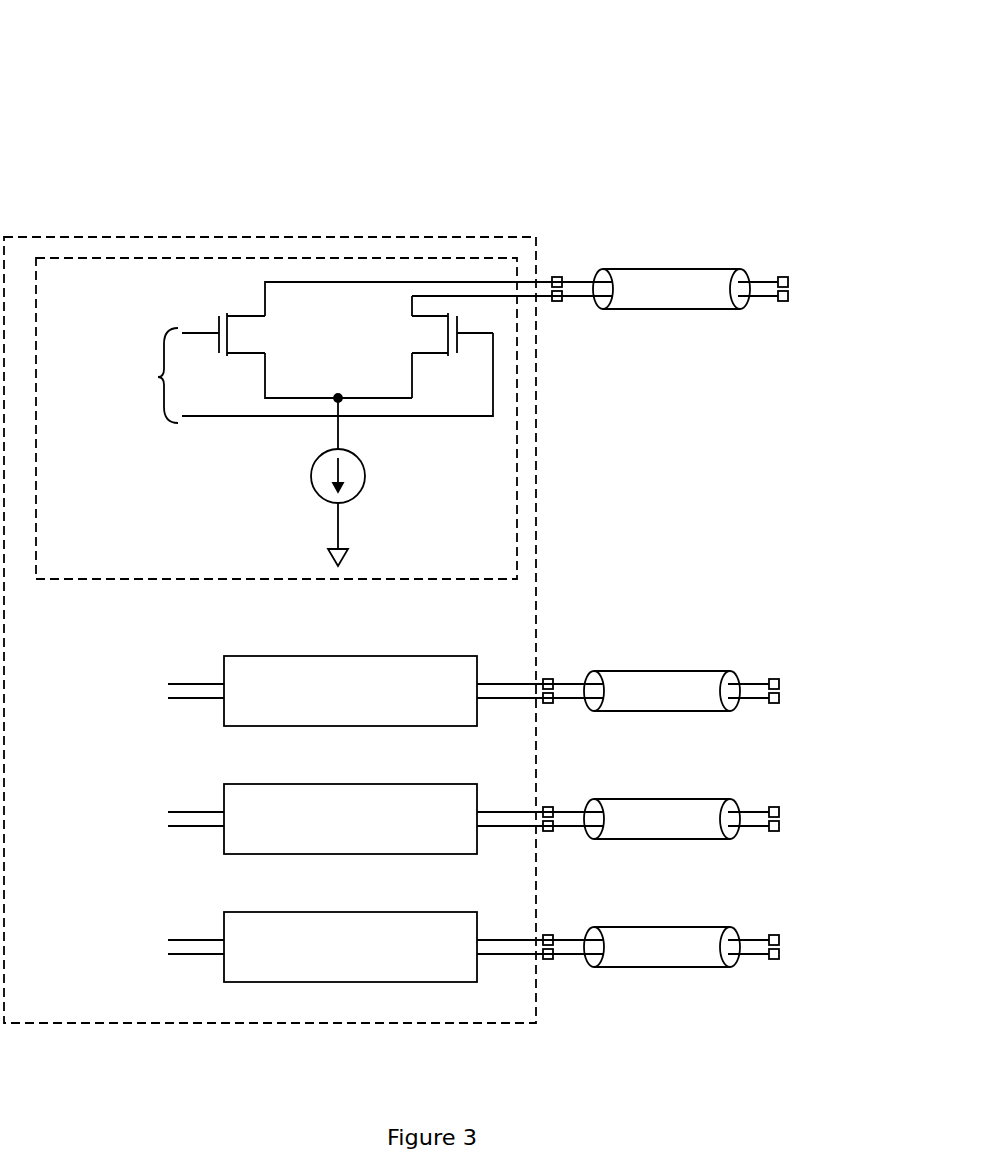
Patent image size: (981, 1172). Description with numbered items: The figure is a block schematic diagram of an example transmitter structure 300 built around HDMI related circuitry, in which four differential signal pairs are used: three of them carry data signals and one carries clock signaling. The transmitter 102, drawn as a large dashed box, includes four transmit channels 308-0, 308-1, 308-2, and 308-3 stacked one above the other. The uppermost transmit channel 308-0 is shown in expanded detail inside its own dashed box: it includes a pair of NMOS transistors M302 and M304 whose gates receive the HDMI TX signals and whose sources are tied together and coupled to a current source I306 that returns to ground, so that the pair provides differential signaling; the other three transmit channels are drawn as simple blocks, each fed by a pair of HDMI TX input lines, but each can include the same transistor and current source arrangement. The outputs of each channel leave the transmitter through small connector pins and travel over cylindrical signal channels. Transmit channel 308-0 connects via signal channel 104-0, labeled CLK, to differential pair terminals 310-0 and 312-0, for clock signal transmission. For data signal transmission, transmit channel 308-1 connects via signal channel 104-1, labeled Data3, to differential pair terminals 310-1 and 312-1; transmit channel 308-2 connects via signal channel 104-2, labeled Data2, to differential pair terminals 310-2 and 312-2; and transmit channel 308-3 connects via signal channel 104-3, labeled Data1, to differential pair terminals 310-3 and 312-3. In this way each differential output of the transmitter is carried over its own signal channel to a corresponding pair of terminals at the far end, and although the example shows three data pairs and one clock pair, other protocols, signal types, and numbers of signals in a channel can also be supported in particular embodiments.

The transmitter structure 300 is at (181, 22).
The transmitter 102 is at (204, 237).
The transmit channel 308-0 is at (185, 557).
The transmit channel 308-1 is at (319, 716).
The transmit channel 308-2 is at (319, 844).
The transmit channel 308-3 is at (319, 972).
The NMOS transistor M302 is at (238, 334).
The NMOS transistor M304 is at (436, 347).
The current source I306 is at (369, 482).
The signal channel 104-0 is at (703, 302).
The signal channel 104-1 is at (693, 706).
The signal channel 104-2 is at (693, 834).
The signal channel 104-3 is at (693, 962).
The differential pair terminal 310-0 is at (778, 285).
The differential pair terminal 312-0 is at (784, 301).
The differential pair terminal 310-1 is at (769, 687).
The differential pair terminal 312-1 is at (775, 703).
The differential pair terminal 310-2 is at (769, 815).
The differential pair terminal 312-2 is at (775, 831).
The differential pair terminal 310-3 is at (769, 943).
The differential pair terminal 312-3 is at (775, 959).